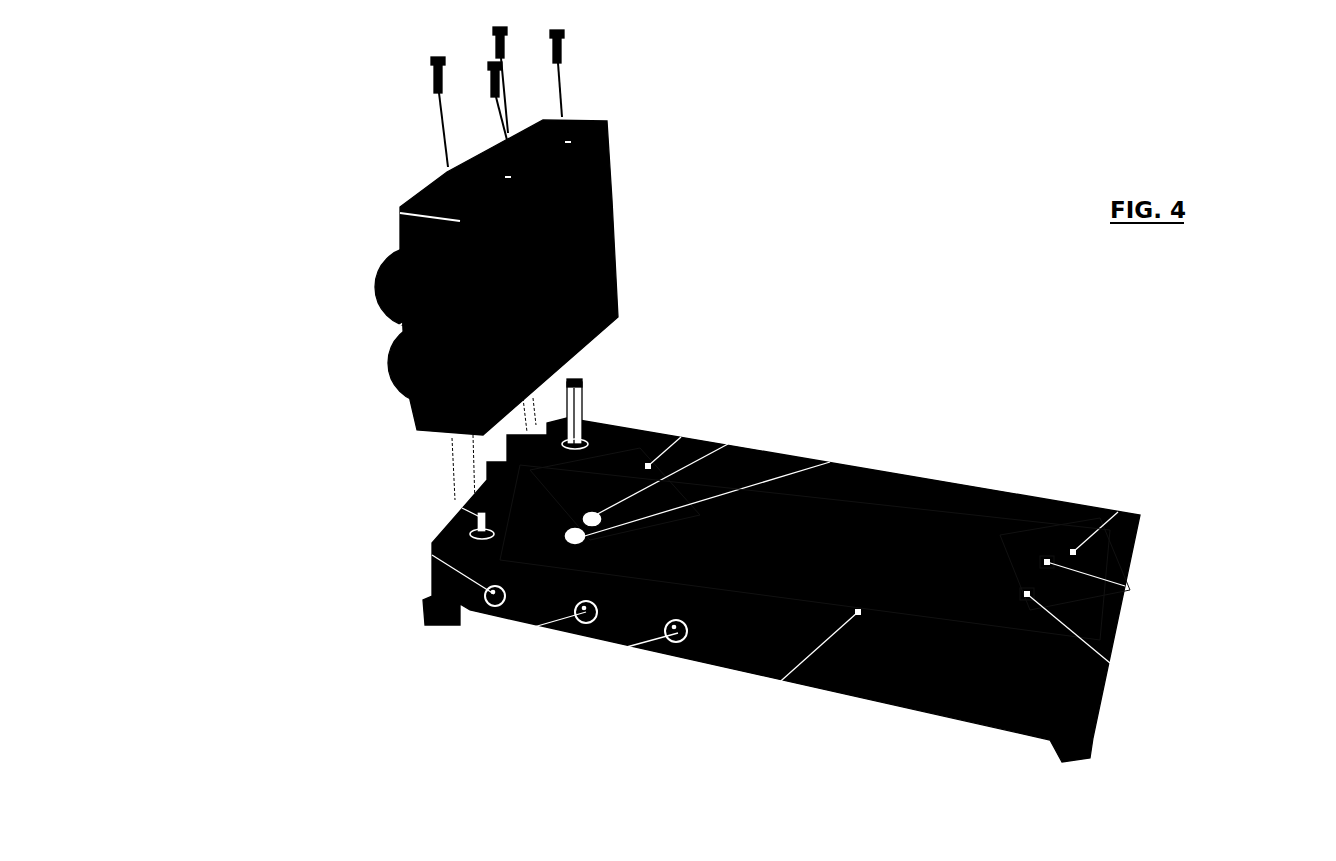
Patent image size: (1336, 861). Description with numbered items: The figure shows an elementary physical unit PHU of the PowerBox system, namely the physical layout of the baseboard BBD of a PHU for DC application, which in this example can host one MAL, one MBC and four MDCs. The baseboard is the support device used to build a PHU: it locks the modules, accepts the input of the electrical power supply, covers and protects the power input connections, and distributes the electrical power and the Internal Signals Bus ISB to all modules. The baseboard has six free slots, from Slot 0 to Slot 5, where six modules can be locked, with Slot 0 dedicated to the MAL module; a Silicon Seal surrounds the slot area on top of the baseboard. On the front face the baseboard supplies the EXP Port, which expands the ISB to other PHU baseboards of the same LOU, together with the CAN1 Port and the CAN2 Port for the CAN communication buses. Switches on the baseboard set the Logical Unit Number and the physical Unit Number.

The slot 0 Slot 0 is at (648, 466).
The slot 5 Slot 5 is at (1073, 552).
The CAN1 port CAN1 Port is at (494, 594).
The CAN2 port CAN2 Port is at (586, 612).
The EXP port EXP Port is at (678, 633).
The silicon seal Silicon Seal is at (858, 612).